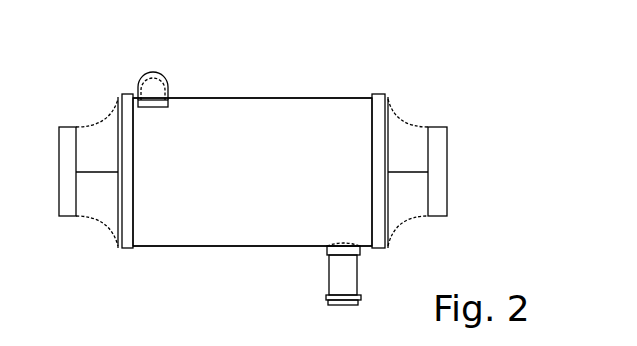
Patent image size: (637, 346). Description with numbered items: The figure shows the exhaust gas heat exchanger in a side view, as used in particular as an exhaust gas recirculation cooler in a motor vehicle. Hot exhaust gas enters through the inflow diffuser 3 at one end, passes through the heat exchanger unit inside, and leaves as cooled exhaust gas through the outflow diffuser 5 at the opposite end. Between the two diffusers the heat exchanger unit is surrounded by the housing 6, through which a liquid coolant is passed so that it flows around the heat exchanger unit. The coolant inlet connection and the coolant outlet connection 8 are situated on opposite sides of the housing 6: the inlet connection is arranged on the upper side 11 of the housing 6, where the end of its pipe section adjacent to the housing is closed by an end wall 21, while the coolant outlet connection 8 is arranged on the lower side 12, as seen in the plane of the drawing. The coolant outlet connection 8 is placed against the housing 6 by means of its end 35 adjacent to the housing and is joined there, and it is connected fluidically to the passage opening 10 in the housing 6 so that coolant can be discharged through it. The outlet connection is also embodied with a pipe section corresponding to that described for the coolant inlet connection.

The inflow diffuser 3 is at (103, 225).
The outflow diffuser 5 is at (405, 121).
The housing 6 is at (277, 116).
The coolant outlet connection 8 is at (326, 281).
The passage opening 10 is at (341, 252).
The upper side 11 is at (216, 98).
The lower side 12 is at (208, 247).
The end wall 21 is at (156, 104).
The end 35 is at (327, 248).